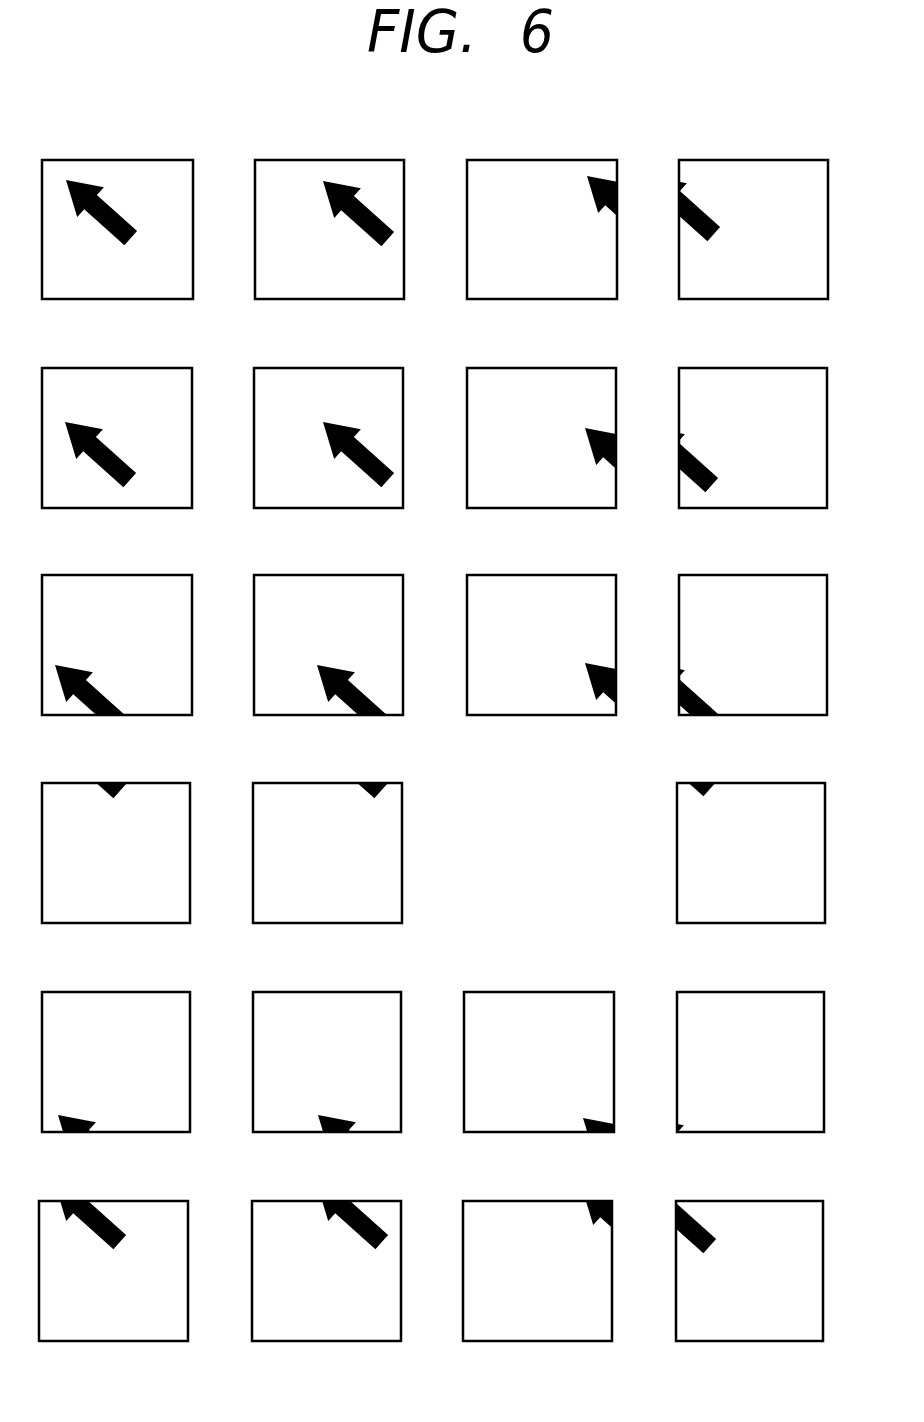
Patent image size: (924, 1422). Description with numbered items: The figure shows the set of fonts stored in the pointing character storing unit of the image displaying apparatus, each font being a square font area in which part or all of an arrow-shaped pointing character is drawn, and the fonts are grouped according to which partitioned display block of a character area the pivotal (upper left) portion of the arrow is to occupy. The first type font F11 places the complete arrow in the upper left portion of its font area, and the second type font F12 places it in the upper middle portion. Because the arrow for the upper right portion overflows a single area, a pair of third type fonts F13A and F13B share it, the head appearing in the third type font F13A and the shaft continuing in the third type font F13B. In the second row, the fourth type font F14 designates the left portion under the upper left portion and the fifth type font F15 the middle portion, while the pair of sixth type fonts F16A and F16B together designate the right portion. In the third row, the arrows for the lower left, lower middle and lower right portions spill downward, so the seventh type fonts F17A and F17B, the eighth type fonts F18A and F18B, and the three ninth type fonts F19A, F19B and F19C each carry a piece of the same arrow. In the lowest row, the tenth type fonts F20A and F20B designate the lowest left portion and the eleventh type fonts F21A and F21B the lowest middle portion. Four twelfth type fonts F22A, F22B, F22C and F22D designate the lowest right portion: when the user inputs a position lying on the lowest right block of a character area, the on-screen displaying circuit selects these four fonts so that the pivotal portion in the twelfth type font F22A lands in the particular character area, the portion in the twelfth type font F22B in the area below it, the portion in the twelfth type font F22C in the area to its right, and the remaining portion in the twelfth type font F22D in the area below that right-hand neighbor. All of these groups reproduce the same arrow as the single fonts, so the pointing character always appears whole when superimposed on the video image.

The first type font F11 is at (148, 160).
The second type font F12 is at (359, 160).
The third type font F13A is at (572, 160).
The third type font F13B is at (783, 160).
The fourth type font F14 is at (147, 368).
The fifth type font F15 is at (358, 368).
The sixth type font F16A is at (571, 368).
The sixth type font F16B is at (782, 368).
The seventh type font F17A is at (147, 575).
The seventh type font F17B is at (145, 783).
The eighth type font F18A is at (358, 575).
The eighth type font F18B is at (357, 783).
The ninth type font F19A is at (571, 575).
The ninth type font F19B is at (782, 575).
The ninth type font F19C is at (780, 783).
The tenth type font F20A is at (145, 992).
The tenth type font F20B is at (143, 1201).
The eleventh type font F21A is at (356, 992).
The eleventh type font F21B is at (356, 1201).
The twelfth type font F22A is at (569, 992).
The twelfth type font F22B is at (567, 1201).
The twelfth type font F22C is at (779, 992).
The twelfth type font F22D is at (778, 1201).